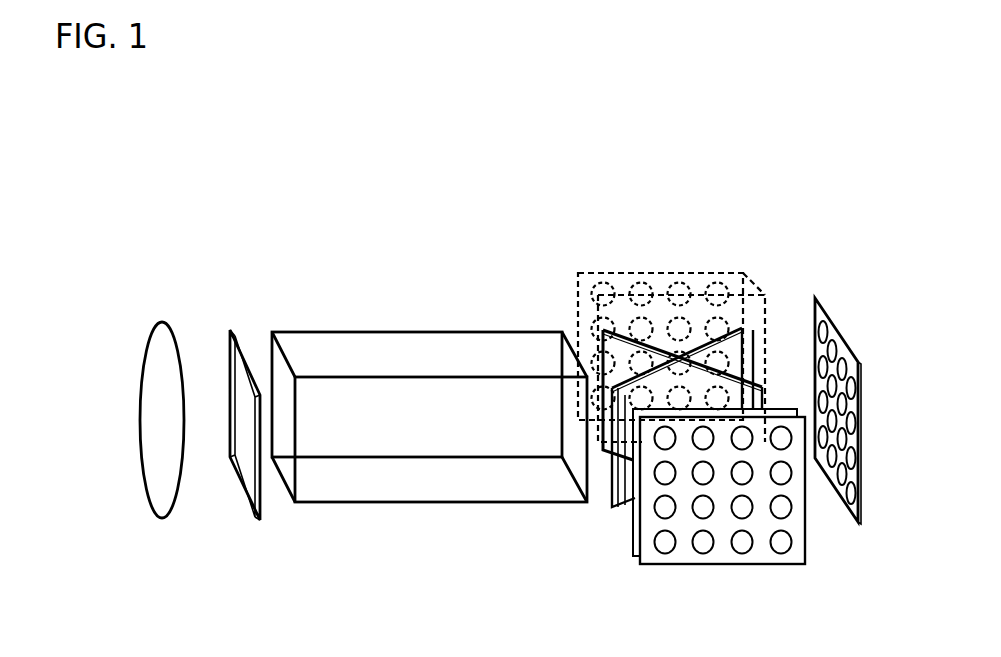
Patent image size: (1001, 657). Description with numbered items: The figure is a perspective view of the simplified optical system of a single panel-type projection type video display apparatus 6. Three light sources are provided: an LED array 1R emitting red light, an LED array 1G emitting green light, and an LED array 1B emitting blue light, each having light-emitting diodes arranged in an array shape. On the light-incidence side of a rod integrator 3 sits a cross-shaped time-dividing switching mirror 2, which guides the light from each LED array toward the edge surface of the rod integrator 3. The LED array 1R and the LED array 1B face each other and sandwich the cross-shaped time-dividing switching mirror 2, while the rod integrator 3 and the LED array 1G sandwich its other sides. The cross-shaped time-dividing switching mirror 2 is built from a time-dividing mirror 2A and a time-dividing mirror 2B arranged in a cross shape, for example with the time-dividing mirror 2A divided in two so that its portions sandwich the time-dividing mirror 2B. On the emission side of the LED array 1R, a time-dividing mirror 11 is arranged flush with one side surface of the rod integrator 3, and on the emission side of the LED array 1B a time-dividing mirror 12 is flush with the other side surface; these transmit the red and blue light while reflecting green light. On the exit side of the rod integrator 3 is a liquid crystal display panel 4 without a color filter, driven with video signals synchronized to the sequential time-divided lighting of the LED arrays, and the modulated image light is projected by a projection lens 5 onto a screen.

The LED array 1R is at (660, 273).
The LED array 1G is at (837, 323).
The LED array 1B is at (718, 560).
The cross-shaped time-dividing switching mirror 2 is at (612, 513).
The time-dividing mirror 2A is at (743, 328).
The time-dividing mirror 2B is at (762, 387).
The rod integrator 3 is at (453, 498).
The liquid crystal display panel 4 is at (255, 520).
The projection lens 5 is at (162, 518).
The projection type video display apparatus 6 is at (387, 272).
The time-dividing mirror 11 is at (748, 271).
The time-dividing mirror 12 is at (635, 545).